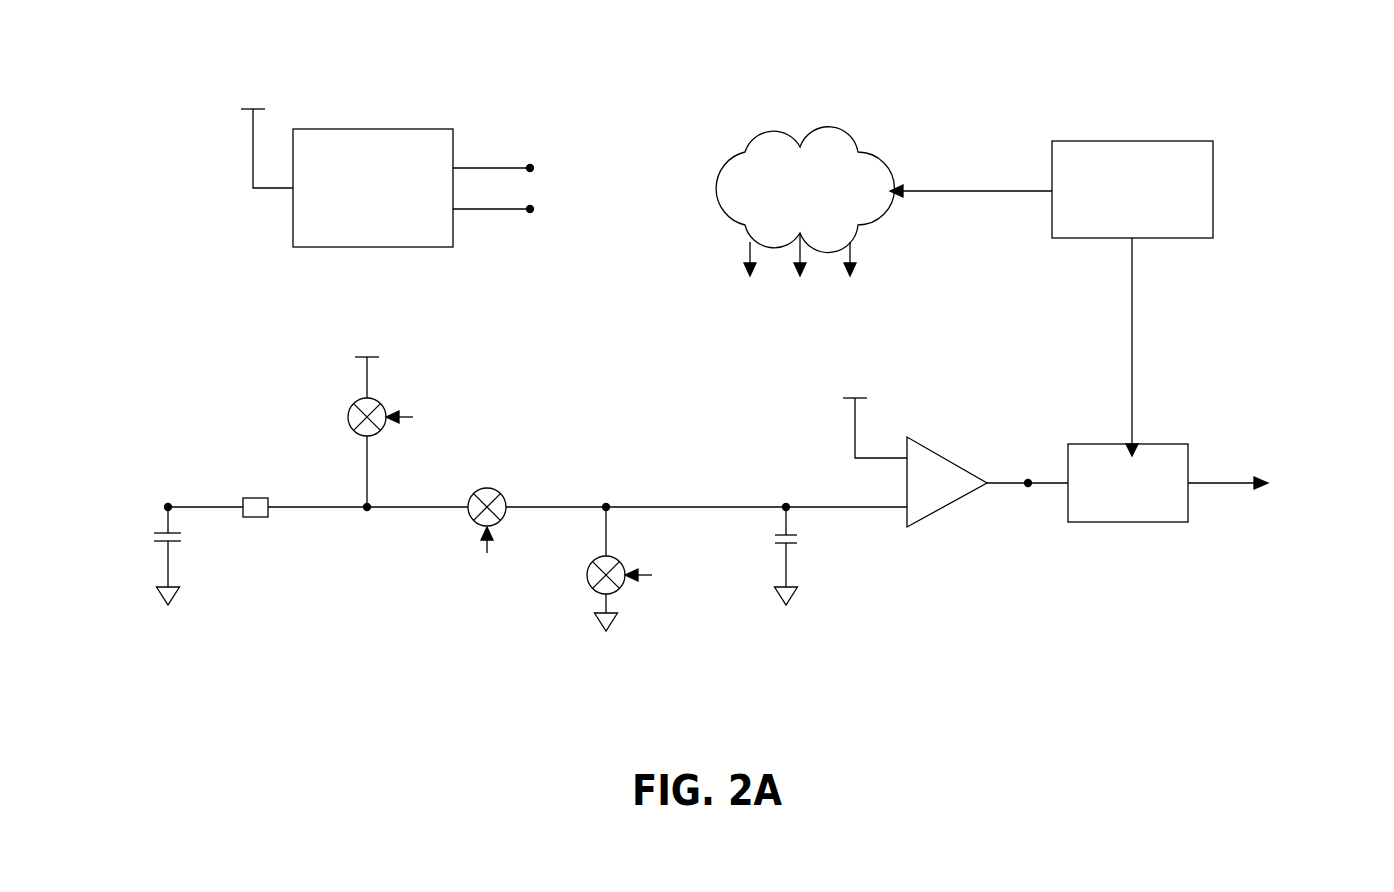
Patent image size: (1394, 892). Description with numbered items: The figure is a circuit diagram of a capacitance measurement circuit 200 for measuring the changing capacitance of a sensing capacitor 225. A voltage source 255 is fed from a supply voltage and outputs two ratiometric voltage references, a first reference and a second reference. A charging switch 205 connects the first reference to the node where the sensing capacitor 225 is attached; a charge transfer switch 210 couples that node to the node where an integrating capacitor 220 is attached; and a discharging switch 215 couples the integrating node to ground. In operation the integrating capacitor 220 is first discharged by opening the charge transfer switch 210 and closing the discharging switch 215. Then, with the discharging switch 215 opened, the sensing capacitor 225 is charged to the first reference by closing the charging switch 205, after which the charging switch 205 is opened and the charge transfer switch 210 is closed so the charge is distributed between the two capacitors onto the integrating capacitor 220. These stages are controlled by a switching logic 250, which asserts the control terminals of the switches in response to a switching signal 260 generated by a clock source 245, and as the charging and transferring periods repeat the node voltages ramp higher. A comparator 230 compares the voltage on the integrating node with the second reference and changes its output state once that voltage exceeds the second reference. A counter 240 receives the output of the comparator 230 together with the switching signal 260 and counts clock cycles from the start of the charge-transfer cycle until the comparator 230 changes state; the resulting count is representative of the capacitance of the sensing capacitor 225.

The capacitance measurement circuit 200 is at (88, 388).
The charging switch 205 is at (348, 416).
The charge transfer switch 210 is at (495, 489).
The discharging switch 215 is at (592, 589).
The integrating capacitor 220 is at (766, 545).
The sensing capacitor 225 is at (181, 541).
The comparator 230 is at (958, 505).
The counter 240 is at (1160, 522).
The clock source 245 is at (1148, 232).
The switching logic 250 is at (853, 221).
The voltage source 255 is at (389, 229).
The switching signal 260 is at (1132, 277).